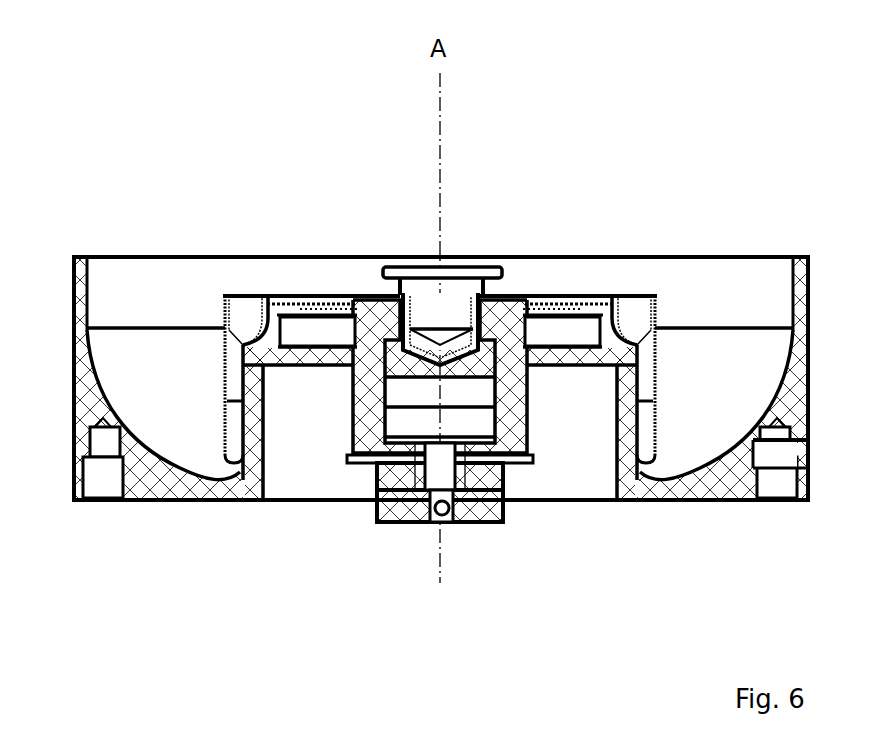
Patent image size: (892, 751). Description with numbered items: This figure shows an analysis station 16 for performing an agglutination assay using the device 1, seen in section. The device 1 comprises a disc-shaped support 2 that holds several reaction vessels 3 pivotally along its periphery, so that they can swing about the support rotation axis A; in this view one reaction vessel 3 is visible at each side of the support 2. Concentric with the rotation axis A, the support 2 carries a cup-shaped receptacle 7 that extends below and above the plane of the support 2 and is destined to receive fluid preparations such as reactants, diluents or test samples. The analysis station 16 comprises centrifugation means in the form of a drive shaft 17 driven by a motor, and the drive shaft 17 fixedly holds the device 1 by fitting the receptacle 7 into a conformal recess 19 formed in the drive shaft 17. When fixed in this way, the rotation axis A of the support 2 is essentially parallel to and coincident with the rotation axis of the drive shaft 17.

The device 1 is at (252, 273).
The support 2 is at (353, 300).
The reaction vessel 3 is at (213, 321).
The cup-shaped receptacle 7 is at (458, 293).
The analysis station 16 is at (120, 628).
The drive shaft 17 is at (412, 455).
The conformal recess 19 is at (508, 453).